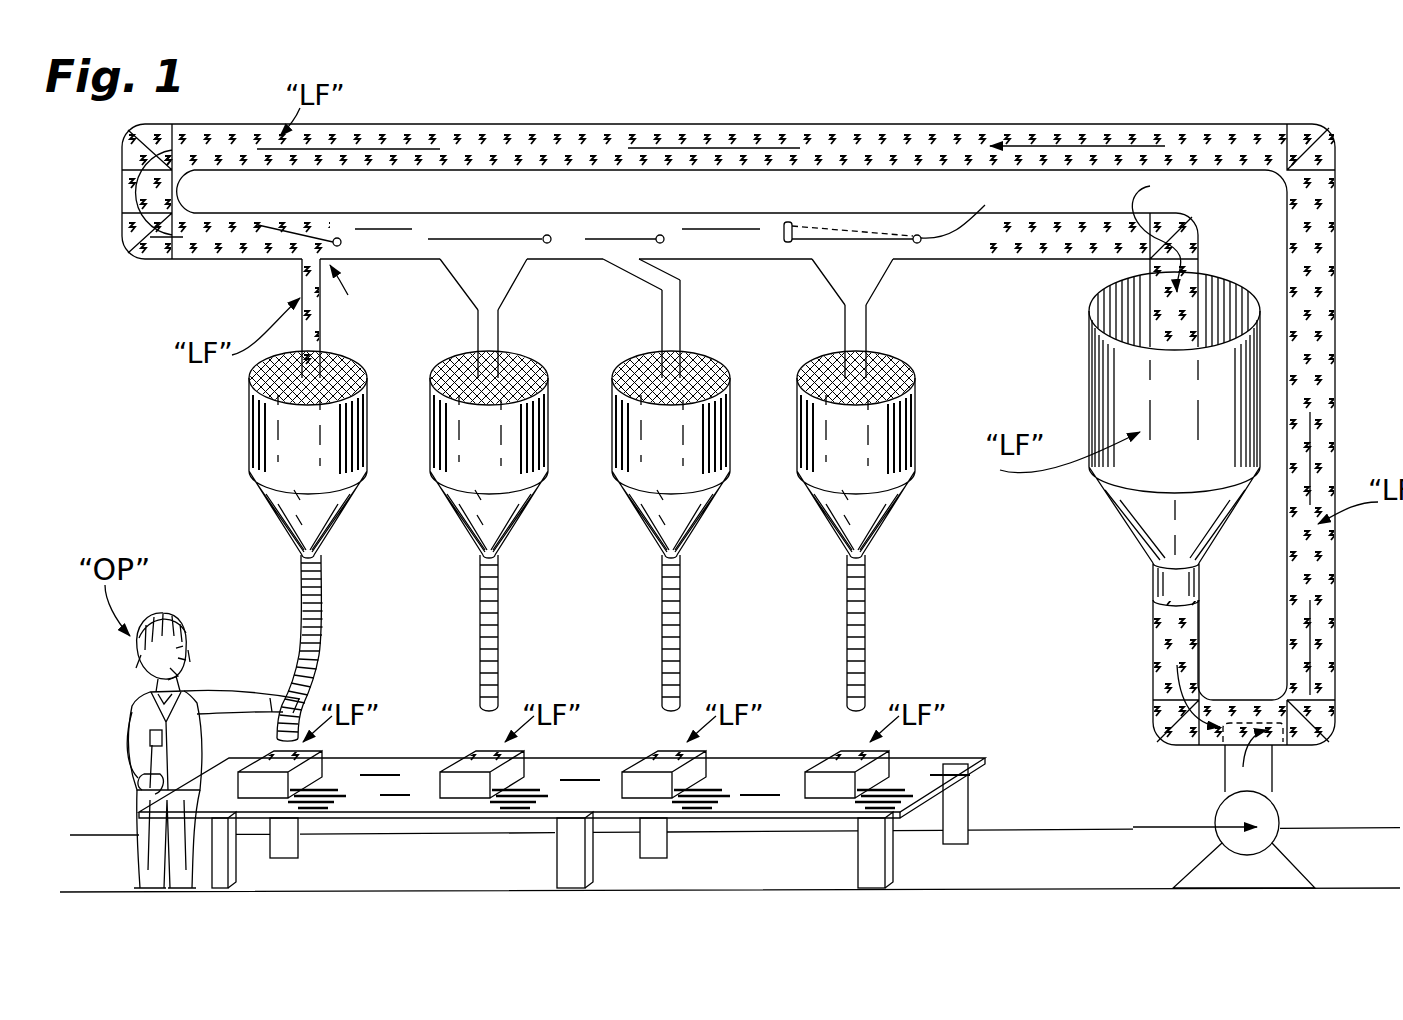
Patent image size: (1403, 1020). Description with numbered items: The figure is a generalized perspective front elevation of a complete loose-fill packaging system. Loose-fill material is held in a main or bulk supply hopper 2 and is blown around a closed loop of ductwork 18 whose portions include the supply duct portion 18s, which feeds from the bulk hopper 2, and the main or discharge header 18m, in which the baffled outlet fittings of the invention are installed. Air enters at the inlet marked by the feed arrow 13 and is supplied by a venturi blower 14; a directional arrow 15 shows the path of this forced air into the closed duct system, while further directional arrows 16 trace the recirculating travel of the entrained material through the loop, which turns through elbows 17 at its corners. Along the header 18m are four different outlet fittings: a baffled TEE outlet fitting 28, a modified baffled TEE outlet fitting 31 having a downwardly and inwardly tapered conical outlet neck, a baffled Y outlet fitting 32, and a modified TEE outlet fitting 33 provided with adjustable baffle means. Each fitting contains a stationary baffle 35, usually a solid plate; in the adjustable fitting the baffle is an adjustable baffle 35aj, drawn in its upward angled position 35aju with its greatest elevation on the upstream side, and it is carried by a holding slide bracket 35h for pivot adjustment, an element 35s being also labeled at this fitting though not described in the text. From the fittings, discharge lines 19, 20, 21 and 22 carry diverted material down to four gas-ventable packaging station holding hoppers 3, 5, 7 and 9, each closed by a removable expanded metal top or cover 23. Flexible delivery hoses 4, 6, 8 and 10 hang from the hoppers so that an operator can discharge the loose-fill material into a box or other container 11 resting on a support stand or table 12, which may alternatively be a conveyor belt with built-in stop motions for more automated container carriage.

The bulk supply hopper 2 is at (1125, 512).
The packaging station holding hopper 3 is at (905, 515).
The flexible delivery hose 4 is at (847, 625).
The packaging station holding hopper 5 is at (712, 518).
The flexible delivery hose 6 is at (662, 625).
The packaging station holding hopper 7 is at (532, 518).
The flexible delivery hose 8 is at (480, 625).
The packaging station holding hopper 9 is at (350, 518).
The flexible delivery hose 10 is at (302, 620).
The container 11 is at (274, 752).
The support table 12 is at (432, 820).
The feed arrow 13 is at (1170, 832).
The venturi blower 14 is at (1280, 815).
The directional arrow 15 is at (1243, 767).
The directional arrows 16 is at (130, 191).
The elbow 17 is at (133, 126).
The air duct 18 is at (1200, 274).
The main discharge header 18m is at (503, 213).
The supply duct portion 18s is at (135, 217).
The discharge line 19 is at (845, 327).
The discharge line 20 is at (662, 327).
The discharge line 21 is at (478, 327).
The discharge line 22 is at (302, 293).
The hopper top 23 is at (368, 365).
The baffled TEE outlet fitting 28 is at (356, 291).
The modified baffled TEE outlet fitting 31 is at (538, 262).
The baffled Y outlet fitting 32 is at (665, 262).
The modified TEE outlet fitting with adjustable baffle 33 is at (900, 262).
The stationary baffle 35 is at (313, 228).
The holding slide bracket 35h is at (785, 232).
The adjustable baffle 35aj is at (845, 242).
The adjustable baffle in upward angled position 35aju is at (862, 236).
The flap spring 35s is at (985, 205).